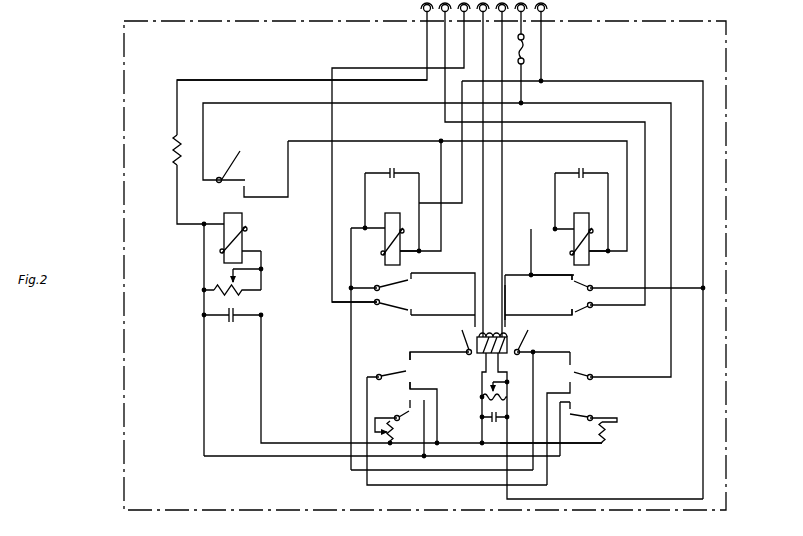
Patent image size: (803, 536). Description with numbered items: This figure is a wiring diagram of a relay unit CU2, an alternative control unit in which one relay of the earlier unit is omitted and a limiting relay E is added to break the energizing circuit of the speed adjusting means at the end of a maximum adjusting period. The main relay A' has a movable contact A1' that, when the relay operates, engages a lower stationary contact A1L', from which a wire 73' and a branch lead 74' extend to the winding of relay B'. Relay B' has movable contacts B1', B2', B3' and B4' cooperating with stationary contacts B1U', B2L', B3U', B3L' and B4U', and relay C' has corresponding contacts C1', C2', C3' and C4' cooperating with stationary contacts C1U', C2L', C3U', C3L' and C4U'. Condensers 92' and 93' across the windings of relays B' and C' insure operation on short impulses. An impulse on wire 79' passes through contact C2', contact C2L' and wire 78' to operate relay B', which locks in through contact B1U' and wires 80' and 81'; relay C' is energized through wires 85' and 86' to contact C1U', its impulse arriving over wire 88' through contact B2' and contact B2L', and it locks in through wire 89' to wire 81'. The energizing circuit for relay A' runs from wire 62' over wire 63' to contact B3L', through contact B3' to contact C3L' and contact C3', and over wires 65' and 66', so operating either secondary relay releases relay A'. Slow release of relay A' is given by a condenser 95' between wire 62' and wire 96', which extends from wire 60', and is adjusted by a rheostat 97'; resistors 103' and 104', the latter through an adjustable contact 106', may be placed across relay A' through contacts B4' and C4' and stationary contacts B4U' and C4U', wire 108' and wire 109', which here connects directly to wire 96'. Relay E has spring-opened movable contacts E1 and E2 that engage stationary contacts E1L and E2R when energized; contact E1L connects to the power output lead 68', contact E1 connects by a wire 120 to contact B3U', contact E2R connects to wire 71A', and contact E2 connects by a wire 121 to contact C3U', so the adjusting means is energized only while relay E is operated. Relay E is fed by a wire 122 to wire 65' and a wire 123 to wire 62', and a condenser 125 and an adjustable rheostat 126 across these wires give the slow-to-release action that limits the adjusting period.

The relay unit CU2 is at (119, 381).
The wire 88' is at (318, 156).
The wire 60' is at (302, 69).
The wire 81' is at (552, 58).
The wire 66' is at (524, 47).
The wire 65' is at (622, 290).
The wire 89' is at (647, 304).
The wire 79' is at (556, 158).
The power output lead 68' is at (508, 174).
The wire 71A' is at (520, 174).
The wire 80' is at (476, 147).
The branch lead 74' is at (421, 196).
The wire 73' is at (457, 187).
The lower stationary contact A1L' is at (266, 169).
The movable contact A1' is at (362, 143).
The relay A' is at (242, 238).
The rheostat 97' is at (253, 274).
The wire 96' is at (179, 340).
The condenser 95' is at (233, 326).
The wire 62' is at (431, 379).
The wire 109' is at (355, 420).
The wire 108' is at (429, 453).
The wire 78' is at (416, 477).
The wire 121 is at (534, 364).
The wire 120 is at (418, 356).
The wire 63' is at (442, 413).
The wire 123 is at (481, 438).
The wire 122 is at (702, 488).
The condenser 125 is at (500, 421).
The adjustable rheostat 126 is at (506, 395).
The limiting relay E is at (486, 355).
The movable contact E1 is at (461, 347).
The stationary contact E1L is at (473, 329).
The movable contact E2 is at (530, 348).
The stationary contact E2R is at (510, 329).
The wire 86' is at (521, 301).
The wire 85' is at (540, 251).
The relay B' is at (385, 228).
The condenser 92' is at (390, 201).
The relay C' is at (581, 228).
The condenser 93' is at (581, 201).
The movable contact B1' is at (399, 349).
The stationary contact B1U' is at (432, 269).
The movable contact B2' is at (391, 303).
The stationary contact B2L' is at (384, 318).
The movable contact C1' is at (588, 280).
The stationary contact C1U' is at (555, 292).
The movable contact C2' is at (600, 288).
The stationary contact C2L' is at (594, 317).
The movable contact B3' is at (452, 422).
The upper stationary contact B3U' is at (388, 351).
The lower stationary contact B3L' is at (389, 389).
The movable contact B4' is at (395, 426).
The stationary contact B4U' is at (389, 407).
The resistor 103' is at (350, 433).
The movable contact C3' is at (596, 241).
The upper stationary contact C3U' is at (600, 353).
The lower stationary contact C3L' is at (577, 433).
The movable contact C4' is at (612, 420).
The stationary contact C4U' is at (614, 427).
The adjustable contact 106' is at (634, 435).
The resistor 104' is at (580, 453).